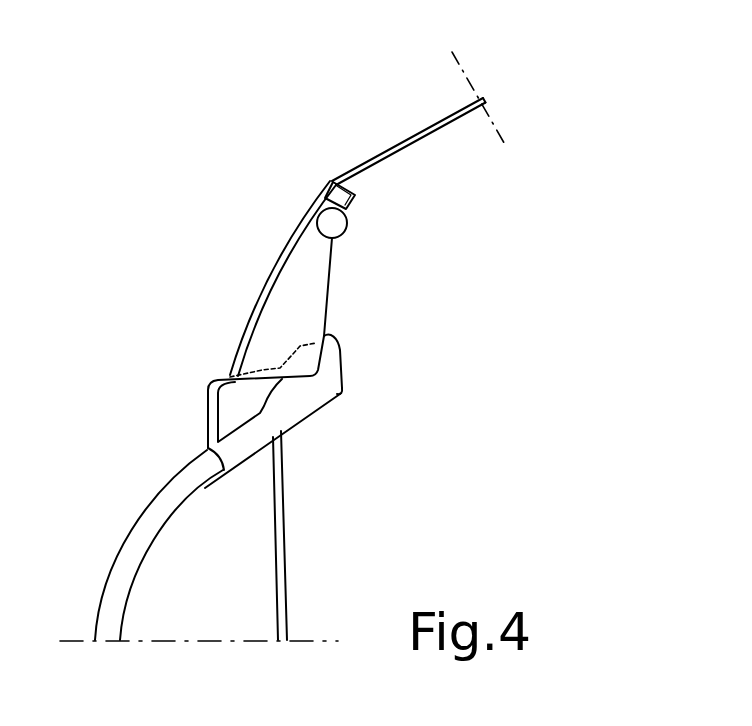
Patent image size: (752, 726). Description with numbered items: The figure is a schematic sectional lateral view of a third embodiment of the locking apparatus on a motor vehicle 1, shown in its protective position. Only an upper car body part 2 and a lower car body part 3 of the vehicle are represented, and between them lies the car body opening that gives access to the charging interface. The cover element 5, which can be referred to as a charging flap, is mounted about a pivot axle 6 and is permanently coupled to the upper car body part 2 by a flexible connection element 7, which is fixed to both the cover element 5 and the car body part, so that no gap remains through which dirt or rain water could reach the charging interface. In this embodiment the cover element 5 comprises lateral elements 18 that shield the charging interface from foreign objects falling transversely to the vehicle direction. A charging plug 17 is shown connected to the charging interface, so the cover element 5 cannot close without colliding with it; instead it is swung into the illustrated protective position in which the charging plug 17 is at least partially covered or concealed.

The motor vehicle 1 is at (409, 109).
The upper car body part 2 is at (410, 134).
The lower car body part 3 is at (272, 562).
The cover element 5 is at (262, 277).
The pivot axle 6 is at (320, 221).
The flexible connection element 7 is at (358, 204).
The charging plug 17 is at (333, 387).
The lateral elements 18 is at (316, 262).